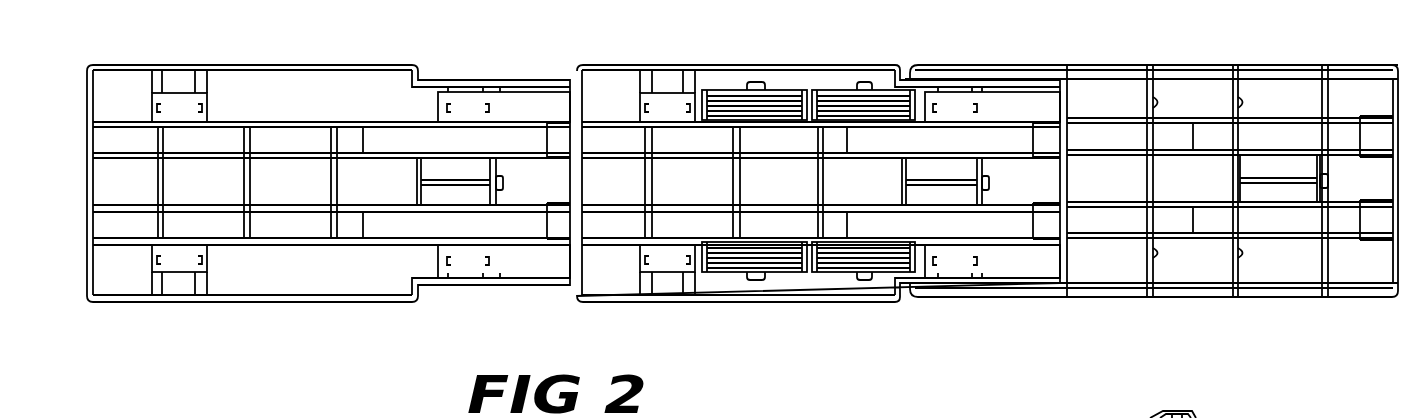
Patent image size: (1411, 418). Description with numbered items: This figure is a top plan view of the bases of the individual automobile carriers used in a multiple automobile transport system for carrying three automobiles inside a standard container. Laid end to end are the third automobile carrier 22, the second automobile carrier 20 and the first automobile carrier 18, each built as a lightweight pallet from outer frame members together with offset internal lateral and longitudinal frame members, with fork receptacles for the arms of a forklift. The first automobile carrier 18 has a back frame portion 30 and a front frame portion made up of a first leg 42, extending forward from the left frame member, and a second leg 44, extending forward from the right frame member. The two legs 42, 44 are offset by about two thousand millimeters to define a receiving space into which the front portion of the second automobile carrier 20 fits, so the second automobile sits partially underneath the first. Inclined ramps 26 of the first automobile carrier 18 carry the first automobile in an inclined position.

The first automobile carrier 18 is at (1182, 55).
The second automobile carrier 20 is at (830, 59).
The third automobile carrier 22 is at (320, 60).
The back frame portion 30 is at (1314, 59).
The second leg 44 is at (1002, 59).
The first leg 42 is at (987, 299).
The inclined ramps 26 is at (1103, 417).